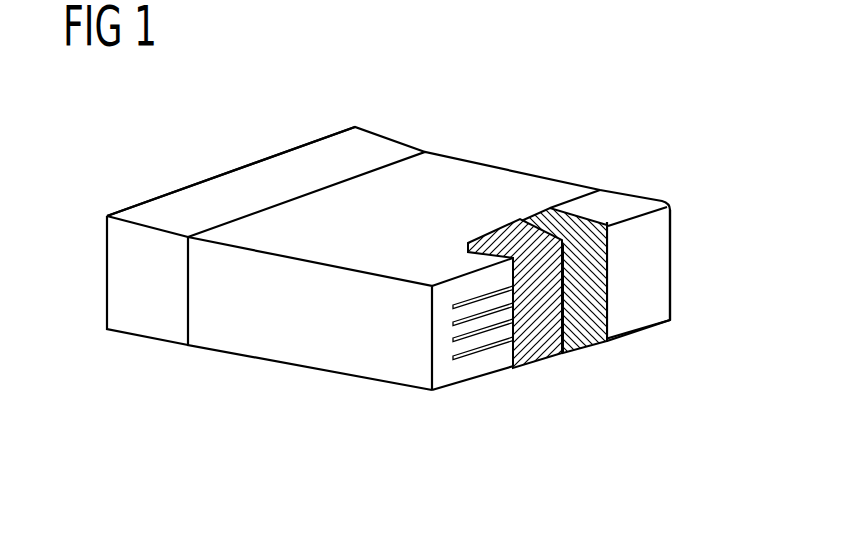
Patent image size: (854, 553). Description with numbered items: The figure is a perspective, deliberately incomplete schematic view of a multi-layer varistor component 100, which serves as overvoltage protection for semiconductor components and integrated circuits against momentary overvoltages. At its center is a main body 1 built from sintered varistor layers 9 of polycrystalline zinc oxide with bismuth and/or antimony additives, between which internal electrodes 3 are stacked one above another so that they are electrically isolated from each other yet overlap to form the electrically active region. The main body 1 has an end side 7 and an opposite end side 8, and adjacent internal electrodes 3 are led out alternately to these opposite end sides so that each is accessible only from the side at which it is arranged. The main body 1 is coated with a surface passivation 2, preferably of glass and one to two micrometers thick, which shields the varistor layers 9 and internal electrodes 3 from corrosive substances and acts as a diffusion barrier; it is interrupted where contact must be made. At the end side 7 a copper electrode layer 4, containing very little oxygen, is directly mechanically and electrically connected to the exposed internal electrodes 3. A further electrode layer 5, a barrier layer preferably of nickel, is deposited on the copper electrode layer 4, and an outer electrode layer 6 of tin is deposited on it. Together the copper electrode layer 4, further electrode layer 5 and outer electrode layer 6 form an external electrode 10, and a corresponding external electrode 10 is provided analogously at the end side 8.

The multi-layer varistor component 100 is at (600, 104).
The main body 1 is at (307, 361).
The surface passivation 2 is at (429, 271).
The internal electrodes 3 is at (453, 392).
The varistor layers 9 is at (475, 343).
The copper electrode layer 4 is at (543, 357).
The further electrode layer 5 is at (593, 347).
The outer electrode layer 6 is at (146, 330).
The external electrode 10 is at (647, 327).
The end side 7 is at (684, 259).
The end side 8 is at (204, 172).